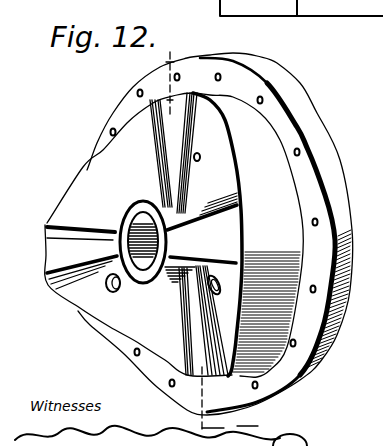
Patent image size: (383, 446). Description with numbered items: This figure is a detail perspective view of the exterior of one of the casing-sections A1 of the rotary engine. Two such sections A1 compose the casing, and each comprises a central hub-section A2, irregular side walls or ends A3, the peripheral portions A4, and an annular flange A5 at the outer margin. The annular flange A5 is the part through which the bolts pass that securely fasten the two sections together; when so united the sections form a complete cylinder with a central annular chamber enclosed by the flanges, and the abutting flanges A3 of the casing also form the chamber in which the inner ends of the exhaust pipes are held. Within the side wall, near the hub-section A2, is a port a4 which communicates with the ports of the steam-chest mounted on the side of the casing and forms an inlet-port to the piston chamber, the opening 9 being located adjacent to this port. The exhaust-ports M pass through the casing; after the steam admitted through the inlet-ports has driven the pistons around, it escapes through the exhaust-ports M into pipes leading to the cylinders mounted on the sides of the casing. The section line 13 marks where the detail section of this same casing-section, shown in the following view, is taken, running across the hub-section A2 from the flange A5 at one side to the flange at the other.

The section line 13 13 is at (192, 50).
The casing section A1 is at (122, 157).
The hub-section A2 is at (140, 287).
The irregular side wall or end A3 is at (87, 198).
The peripheral portion A4 is at (234, 235).
The annular flange A5 is at (303, 120).
The port a4 is at (143, 153).
The opening 9 is at (193, 163).
The exhaust-port M is at (107, 290).